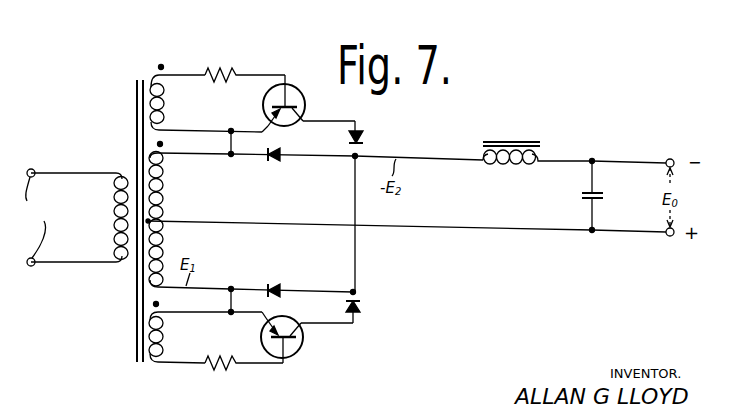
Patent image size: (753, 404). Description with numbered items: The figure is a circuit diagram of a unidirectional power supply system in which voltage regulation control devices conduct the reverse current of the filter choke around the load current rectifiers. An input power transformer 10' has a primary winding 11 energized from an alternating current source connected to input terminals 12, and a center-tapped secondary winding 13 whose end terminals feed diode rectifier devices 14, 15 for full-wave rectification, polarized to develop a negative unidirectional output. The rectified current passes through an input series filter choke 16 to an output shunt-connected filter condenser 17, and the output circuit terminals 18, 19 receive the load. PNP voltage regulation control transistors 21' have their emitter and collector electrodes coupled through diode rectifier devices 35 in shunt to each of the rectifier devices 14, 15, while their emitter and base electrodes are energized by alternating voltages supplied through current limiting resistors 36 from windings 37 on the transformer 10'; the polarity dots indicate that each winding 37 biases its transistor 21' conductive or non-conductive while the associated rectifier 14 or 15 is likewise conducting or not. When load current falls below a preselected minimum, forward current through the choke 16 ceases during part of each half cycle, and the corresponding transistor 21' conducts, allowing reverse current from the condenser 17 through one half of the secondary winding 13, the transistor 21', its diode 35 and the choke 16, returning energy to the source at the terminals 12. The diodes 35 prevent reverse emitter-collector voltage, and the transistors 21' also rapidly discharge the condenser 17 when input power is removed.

The input power transformer 10' is at (117, 221).
The primary winding 11 is at (115, 208).
The input terminals 12 is at (36, 217).
The center-tapped secondary winding 13 is at (164, 190).
The diode rectifier device 14 is at (271, 162).
The diode rectifier device 15 is at (280, 272).
The input series filter choke 16 is at (492, 167).
The output shunt-connected filter condenser 17 is at (580, 194).
The output terminal 18 is at (672, 157).
The output terminal 19 is at (666, 238).
The voltage regulation control transistor 21' is at (308, 223).
The diode rectifier device 35 is at (362, 138).
The current limiting resistor 36 is at (215, 73).
The winding 37 is at (165, 101).